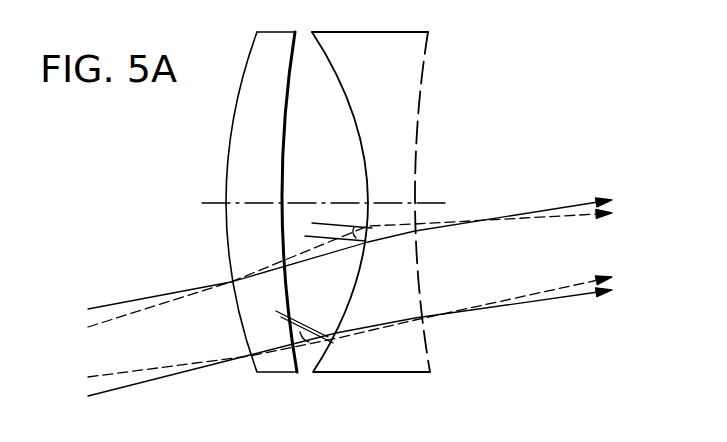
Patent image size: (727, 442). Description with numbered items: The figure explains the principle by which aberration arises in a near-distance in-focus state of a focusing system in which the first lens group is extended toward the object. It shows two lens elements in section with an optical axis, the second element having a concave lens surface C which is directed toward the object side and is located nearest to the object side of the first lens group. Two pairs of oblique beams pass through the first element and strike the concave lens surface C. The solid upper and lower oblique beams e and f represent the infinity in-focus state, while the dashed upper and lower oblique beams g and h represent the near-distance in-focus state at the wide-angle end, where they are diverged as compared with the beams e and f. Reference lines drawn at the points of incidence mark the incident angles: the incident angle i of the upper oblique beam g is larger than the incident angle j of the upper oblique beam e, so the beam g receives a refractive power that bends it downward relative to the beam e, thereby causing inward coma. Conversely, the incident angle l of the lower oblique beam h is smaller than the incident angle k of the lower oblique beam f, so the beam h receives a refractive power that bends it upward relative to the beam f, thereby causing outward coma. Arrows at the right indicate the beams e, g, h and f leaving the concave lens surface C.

The concave lens surface C is at (340, 78).
The upper oblique beam in the infinity in-focus state e is at (108, 305).
The lower oblique beam in the infinity in-focus state f is at (124, 388).
The upper oblique beam in the near-distance in-focus state g is at (119, 318).
The lower oblique beam in the near-distance in-focus state h is at (138, 368).
The incident angle of the upper oblique beam g i is at (348, 233).
The incident angle of the upper oblique beam e j is at (330, 243).
The incident angle of the lower oblique beam f k is at (319, 327).
The incident angle of the lower oblique beam h l is at (292, 332).